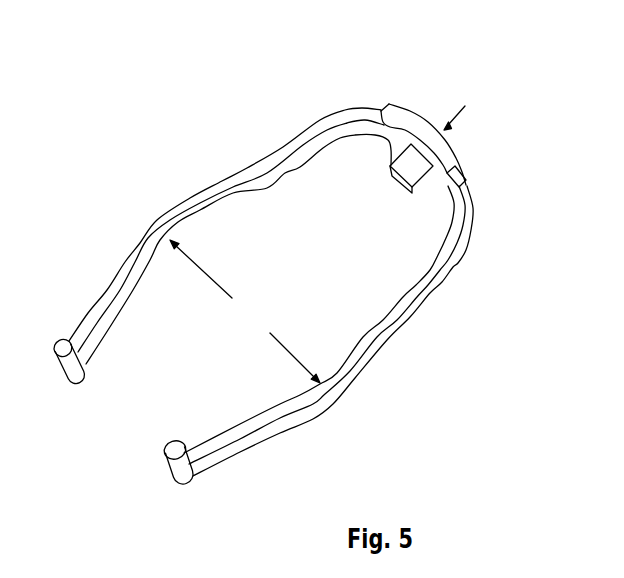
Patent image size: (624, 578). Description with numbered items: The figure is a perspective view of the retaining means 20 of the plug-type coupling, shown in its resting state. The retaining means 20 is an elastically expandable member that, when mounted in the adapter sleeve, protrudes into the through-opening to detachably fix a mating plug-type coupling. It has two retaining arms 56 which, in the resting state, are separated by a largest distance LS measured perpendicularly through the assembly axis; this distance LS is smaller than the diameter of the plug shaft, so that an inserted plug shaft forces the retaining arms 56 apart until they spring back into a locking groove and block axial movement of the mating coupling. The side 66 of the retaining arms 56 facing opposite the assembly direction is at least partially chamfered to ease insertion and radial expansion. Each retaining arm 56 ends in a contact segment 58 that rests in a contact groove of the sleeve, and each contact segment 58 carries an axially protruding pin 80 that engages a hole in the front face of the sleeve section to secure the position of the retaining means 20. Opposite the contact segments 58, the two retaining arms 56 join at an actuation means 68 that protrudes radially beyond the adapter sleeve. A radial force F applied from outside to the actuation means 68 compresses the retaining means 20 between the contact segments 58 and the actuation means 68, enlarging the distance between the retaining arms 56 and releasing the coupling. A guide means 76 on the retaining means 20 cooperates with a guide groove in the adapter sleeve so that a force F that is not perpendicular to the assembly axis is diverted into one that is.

The retaining means 20 is at (208, 148).
The retaining arms 56 is at (150, 231).
The contact segment 58 is at (68, 381).
The side of the retaining arms 66 is at (217, 211).
The actuation means 68 is at (417, 112).
The guide means 76 is at (393, 181).
The pin 80 is at (60, 341).
The largest distance between the retaining arms LS is at (245, 311).
The force F is at (454, 110).